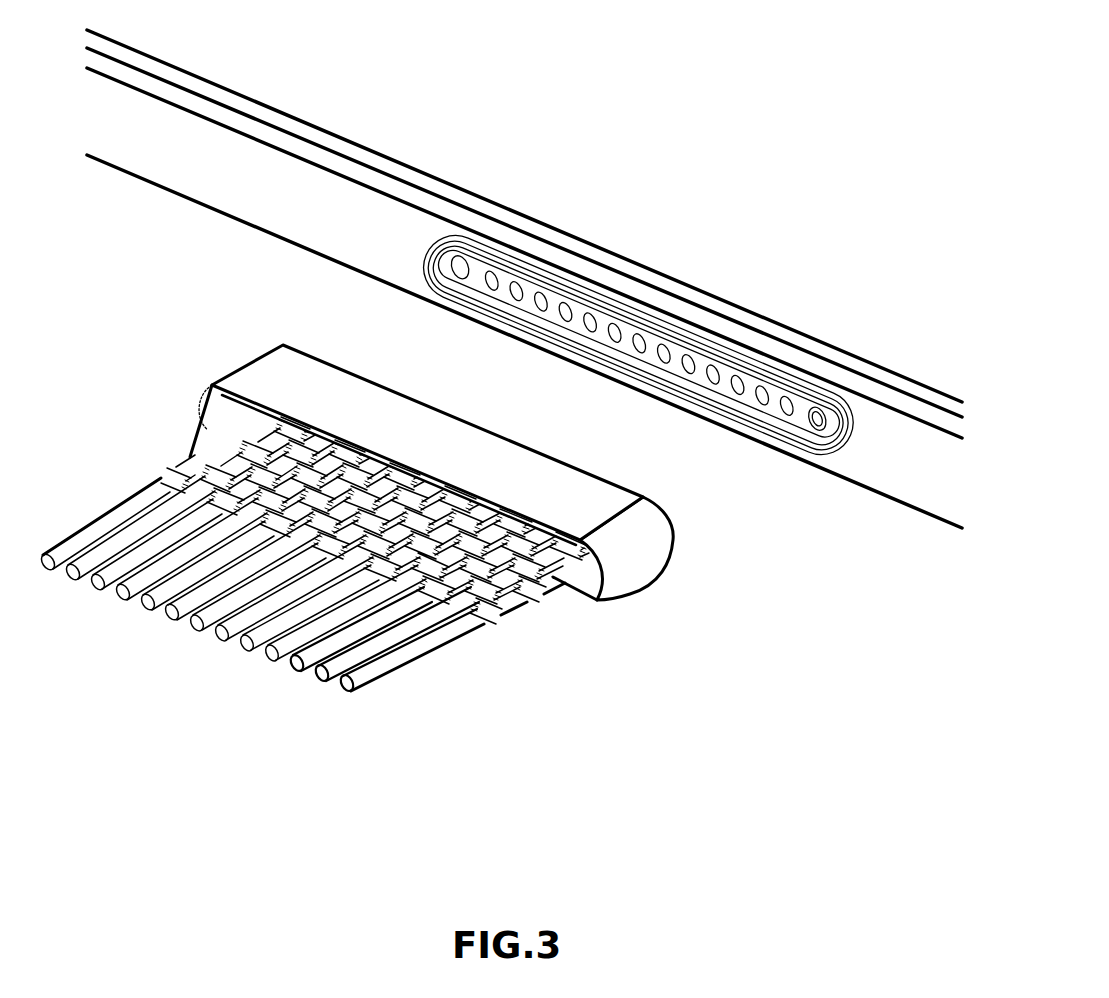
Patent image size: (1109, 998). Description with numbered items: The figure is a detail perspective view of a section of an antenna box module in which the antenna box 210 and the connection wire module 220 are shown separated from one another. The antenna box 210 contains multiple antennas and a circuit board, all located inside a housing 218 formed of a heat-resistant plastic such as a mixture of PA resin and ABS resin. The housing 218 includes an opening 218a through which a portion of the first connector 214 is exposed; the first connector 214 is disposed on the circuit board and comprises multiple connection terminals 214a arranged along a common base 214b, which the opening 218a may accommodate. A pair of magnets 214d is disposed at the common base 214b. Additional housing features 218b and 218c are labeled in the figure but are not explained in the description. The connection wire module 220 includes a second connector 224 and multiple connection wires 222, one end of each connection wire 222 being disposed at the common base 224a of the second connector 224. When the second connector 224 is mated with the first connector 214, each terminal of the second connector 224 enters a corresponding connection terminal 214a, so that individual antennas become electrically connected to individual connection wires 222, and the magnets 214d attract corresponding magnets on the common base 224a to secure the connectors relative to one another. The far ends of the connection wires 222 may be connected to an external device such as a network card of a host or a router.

The antenna box 210 is at (513, 136).
The first connector 214 is at (835, 668).
The connection terminals 214a is at (781, 400).
The common base 214b is at (805, 418).
The magnets 214d is at (818, 418).
The housing 218 is at (674, 186).
The opening 218a is at (439, 248).
The housing bottom surface 218b is at (893, 478).
The housing side surface 218c is at (873, 290).
The connection wire module 220 is at (157, 290).
The connection wires 222 is at (196, 450).
The second connector 224 is at (279, 372).
The common base 224a is at (487, 483).